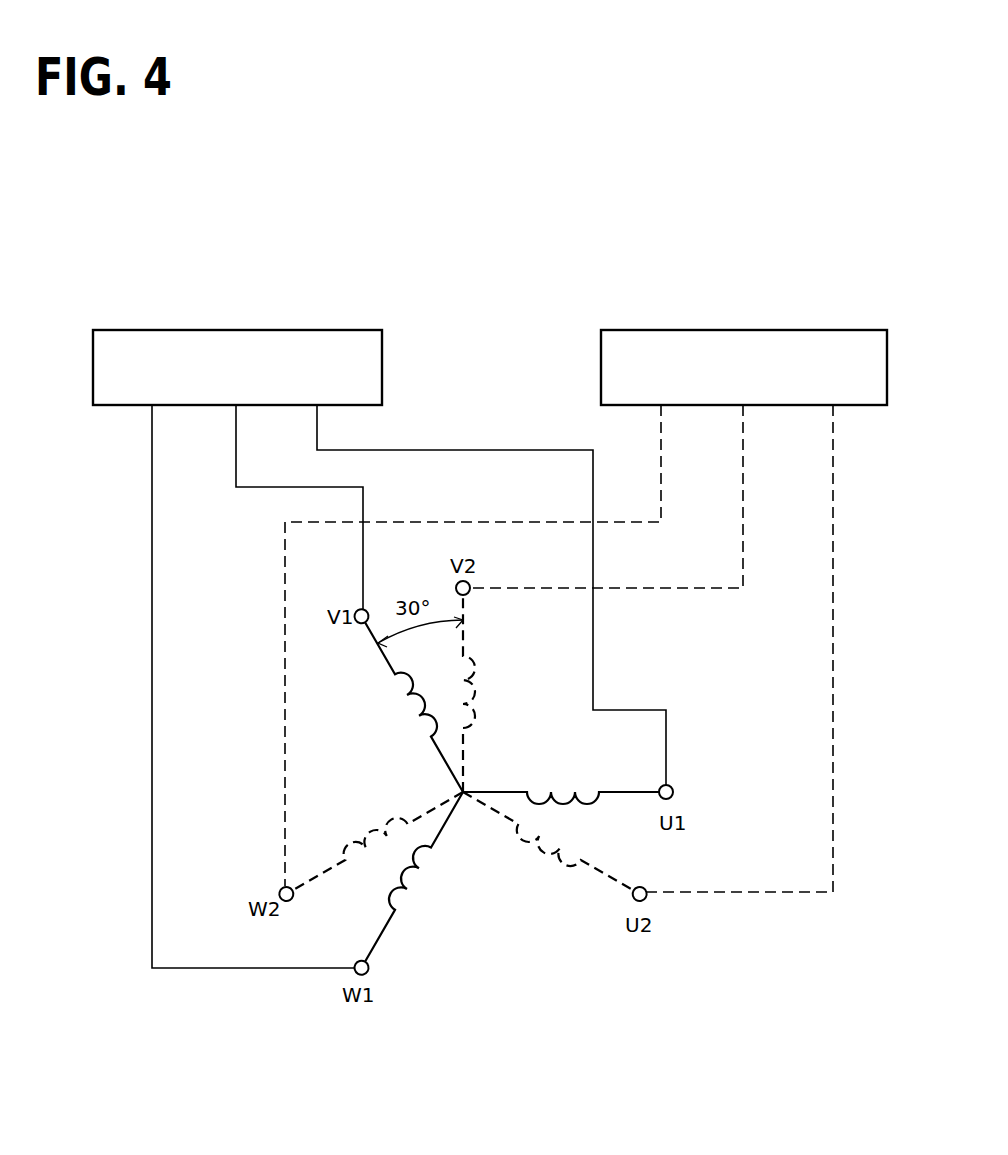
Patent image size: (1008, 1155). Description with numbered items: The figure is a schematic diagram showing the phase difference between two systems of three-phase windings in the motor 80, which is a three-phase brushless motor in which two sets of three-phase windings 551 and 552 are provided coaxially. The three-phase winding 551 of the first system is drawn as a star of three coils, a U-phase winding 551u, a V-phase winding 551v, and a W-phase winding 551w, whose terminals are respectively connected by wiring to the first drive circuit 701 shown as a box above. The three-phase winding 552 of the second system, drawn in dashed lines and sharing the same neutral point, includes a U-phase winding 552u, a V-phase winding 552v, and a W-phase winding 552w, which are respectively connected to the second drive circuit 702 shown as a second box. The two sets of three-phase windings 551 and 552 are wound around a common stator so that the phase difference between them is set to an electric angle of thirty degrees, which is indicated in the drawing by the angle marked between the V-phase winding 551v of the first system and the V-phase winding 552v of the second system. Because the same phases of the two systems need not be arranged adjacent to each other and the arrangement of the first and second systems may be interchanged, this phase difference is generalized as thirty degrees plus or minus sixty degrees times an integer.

The first drive circuit 701 is at (240, 330).
The second drive circuit 702 is at (745, 330).
The motor 80 is at (473, 816).
The three-phase winding of the first system 551 is at (495, 801).
The three-phase winding of the second system 552 is at (461, 774).
The U-phase winding 551u is at (563, 793).
The V-phase winding 551v is at (418, 702).
The W-phase winding 551w is at (407, 875).
The U-phase winding 552u is at (547, 866).
The V-phase winding 552v is at (483, 688).
The W-phase winding 552w is at (370, 838).